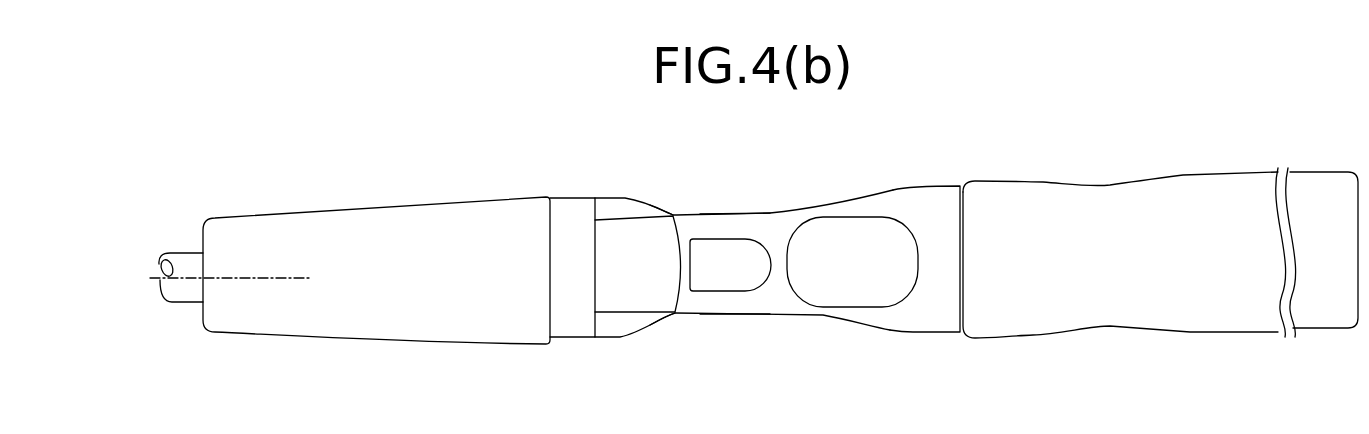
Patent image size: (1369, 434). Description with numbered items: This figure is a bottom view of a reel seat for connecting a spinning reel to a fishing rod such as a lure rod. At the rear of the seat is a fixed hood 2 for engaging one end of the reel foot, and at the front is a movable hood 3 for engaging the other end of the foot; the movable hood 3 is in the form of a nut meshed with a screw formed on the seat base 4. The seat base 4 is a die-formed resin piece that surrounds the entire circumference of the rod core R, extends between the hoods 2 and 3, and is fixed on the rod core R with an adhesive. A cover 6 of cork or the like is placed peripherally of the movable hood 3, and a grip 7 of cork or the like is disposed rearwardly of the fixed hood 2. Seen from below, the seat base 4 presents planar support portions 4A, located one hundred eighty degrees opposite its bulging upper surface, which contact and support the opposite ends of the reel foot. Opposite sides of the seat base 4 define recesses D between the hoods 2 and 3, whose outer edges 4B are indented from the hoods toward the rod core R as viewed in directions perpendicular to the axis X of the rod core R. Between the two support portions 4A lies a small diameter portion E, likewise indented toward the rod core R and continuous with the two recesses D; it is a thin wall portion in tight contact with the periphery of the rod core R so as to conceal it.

The fixed hood 2 is at (934, 263).
The movable hood 3 is at (573, 198).
The seat base 4 is at (819, 314).
The planar support portions 4A is at (640, 252).
The outer edges 4B is at (765, 199).
The cover 6 is at (447, 197).
The grip 7 is at (1132, 197).
The recesses D is at (729, 202).
The small diameter portion E is at (760, 278).
The rod core R is at (191, 252).
The axis X is at (246, 278).